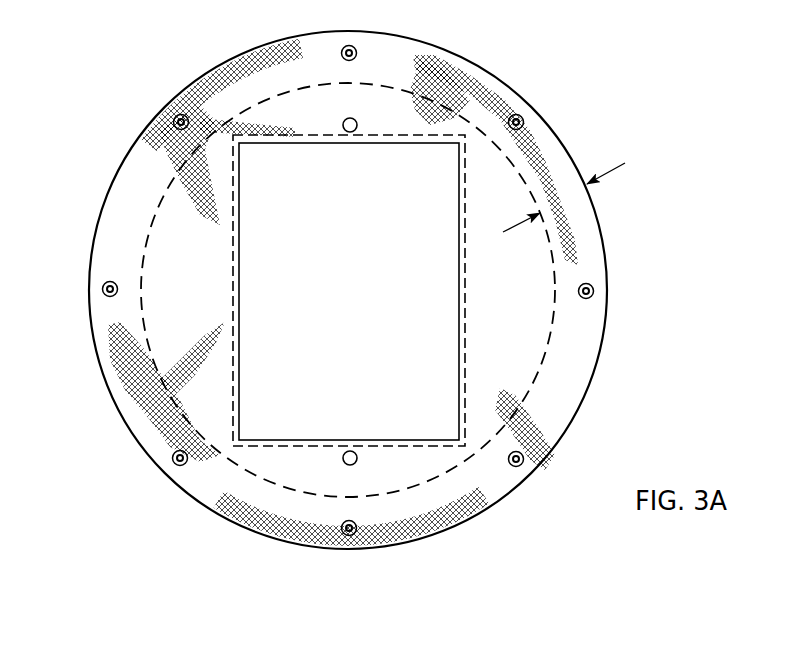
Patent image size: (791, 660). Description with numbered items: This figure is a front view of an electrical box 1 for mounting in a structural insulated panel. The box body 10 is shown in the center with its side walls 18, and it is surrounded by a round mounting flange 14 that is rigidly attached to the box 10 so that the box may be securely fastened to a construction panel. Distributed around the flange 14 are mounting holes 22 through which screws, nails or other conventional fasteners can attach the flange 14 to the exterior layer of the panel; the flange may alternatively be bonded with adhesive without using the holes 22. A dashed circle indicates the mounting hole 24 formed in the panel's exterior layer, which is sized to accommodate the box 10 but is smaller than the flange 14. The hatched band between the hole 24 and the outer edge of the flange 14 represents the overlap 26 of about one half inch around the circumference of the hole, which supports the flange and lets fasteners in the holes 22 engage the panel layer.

The electrical box 1 is at (357, 303).
The box body 10 is at (360, 294).
The mounting flange 14 is at (197, 500).
The side walls 18 is at (349, 290).
The mounting holes 22 is at (357, 52).
The mounting hole 24 is at (515, 165).
The overlap 26 is at (562, 203).